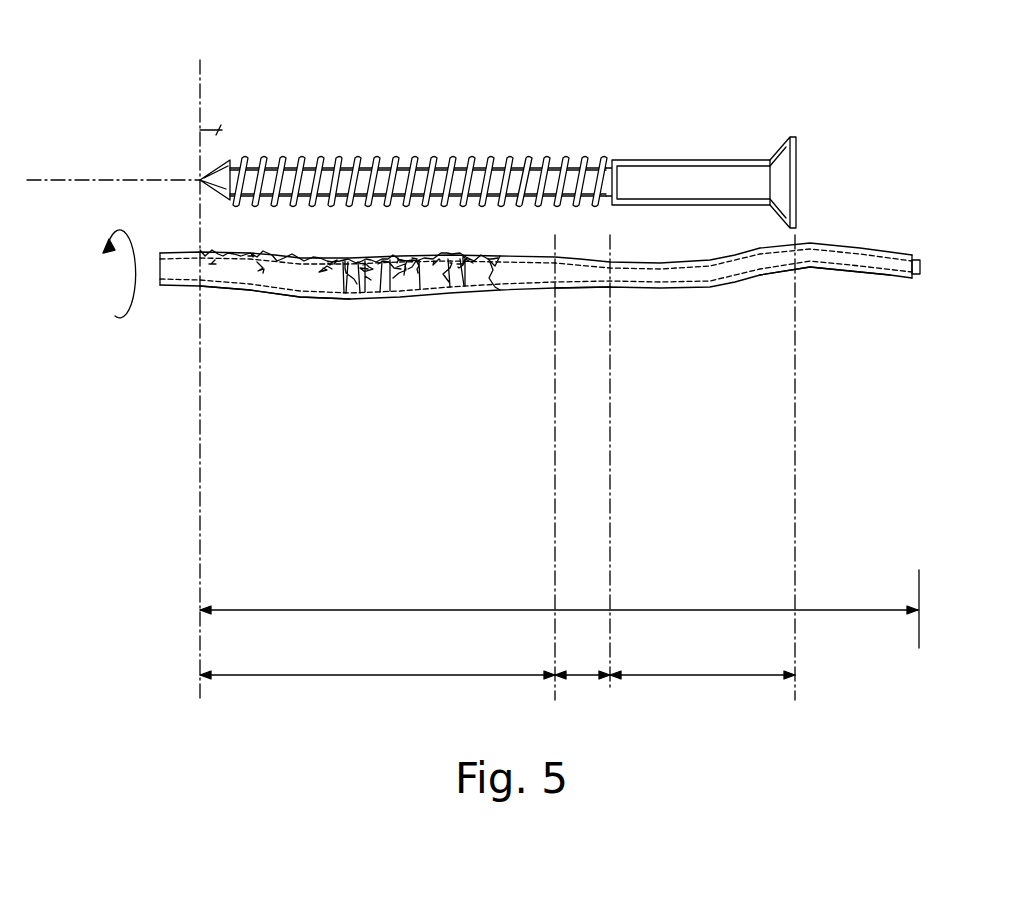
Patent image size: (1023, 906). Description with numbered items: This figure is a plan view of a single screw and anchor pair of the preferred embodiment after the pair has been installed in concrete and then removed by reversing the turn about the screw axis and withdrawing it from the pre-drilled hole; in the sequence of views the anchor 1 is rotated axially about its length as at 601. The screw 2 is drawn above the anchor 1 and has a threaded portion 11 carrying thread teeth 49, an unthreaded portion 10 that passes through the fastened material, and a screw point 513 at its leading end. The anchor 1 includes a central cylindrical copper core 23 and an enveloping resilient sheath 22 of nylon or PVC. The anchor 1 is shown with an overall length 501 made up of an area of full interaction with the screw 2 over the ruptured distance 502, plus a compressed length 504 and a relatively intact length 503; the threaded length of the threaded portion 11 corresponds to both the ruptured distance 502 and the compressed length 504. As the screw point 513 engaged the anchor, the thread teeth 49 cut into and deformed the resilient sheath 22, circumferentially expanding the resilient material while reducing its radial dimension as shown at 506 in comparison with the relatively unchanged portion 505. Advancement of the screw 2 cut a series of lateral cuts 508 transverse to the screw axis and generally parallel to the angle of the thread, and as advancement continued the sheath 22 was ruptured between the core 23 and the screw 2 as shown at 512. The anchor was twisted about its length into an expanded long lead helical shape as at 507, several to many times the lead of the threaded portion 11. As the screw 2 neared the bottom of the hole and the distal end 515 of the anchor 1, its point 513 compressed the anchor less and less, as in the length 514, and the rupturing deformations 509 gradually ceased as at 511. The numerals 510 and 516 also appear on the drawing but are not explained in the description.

The anchor 1 is at (585, 289).
The screw 2 is at (790, 140).
The unthreaded portion 10 is at (680, 160).
The threaded portion 11 is at (418, 137).
The resilient sheath 22 is at (845, 276).
The central cylindrical copper core 23 is at (925, 268).
The thread teeth 49 is at (577, 158).
The overall length 501 is at (847, 610).
The ruptured distance 502 is at (362, 677).
The relatively intact length 503 is at (735, 677).
The compressed length 504 is at (585, 677).
The relatively unchanged portion 505 is at (675, 272).
The reduced radial dimension 506 is at (585, 287).
The expanded long lead helical shape 507 is at (287, 299).
The lateral cuts 508 is at (497, 266).
The rupturing deformations 509 is at (380, 296).
The fibre cracks 510 is at (340, 298).
The cessation of rupturing deformations 511 is at (240, 256).
The sheath rupture 512 is at (508, 293).
The screw point 513 is at (210, 175).
The length of reduced compression 514 is at (233, 130).
The distal end 515 is at (165, 195).
The strand end 516 is at (925, 283).
The axial rotation of anchor 601 is at (115, 261).